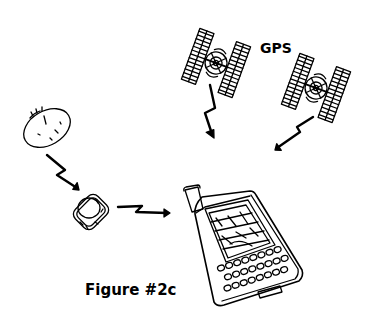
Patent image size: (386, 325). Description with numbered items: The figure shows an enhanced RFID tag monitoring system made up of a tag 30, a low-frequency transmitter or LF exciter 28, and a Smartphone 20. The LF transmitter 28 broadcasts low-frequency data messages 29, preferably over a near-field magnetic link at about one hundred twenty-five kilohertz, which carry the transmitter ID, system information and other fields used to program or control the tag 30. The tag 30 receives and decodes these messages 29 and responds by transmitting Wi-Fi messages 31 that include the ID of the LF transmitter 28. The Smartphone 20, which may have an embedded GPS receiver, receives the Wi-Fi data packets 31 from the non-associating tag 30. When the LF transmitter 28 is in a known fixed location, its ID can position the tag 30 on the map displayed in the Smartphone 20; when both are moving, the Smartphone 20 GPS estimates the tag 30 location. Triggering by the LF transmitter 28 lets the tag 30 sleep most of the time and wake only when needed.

The Smartphone 20 is at (302, 260).
The LF transmitter 28 is at (63, 113).
The low-frequency data messages 29 is at (63, 170).
The tag 30 is at (98, 225).
The Wi-Fi messages 31 is at (127, 203).